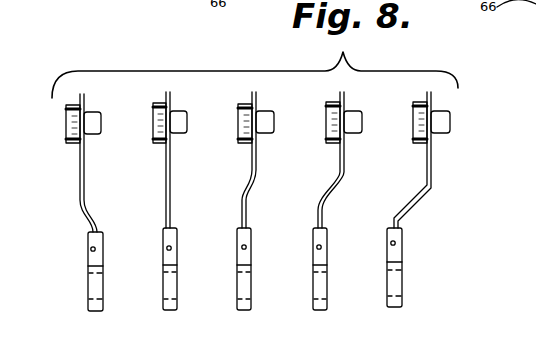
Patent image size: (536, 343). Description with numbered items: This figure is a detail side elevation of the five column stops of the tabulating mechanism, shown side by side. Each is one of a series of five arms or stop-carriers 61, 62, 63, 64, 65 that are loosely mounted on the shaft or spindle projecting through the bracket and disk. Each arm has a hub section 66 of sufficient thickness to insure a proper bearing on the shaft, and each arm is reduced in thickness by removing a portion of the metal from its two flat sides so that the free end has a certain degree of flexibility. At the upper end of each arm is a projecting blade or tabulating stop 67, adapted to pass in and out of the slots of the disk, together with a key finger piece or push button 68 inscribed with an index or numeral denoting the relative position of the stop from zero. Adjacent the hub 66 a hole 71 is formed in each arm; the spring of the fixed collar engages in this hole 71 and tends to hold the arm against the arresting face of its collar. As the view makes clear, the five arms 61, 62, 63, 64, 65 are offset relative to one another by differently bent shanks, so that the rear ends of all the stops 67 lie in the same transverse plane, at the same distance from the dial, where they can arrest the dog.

The arm or stop-carrier 61 is at (85, 178).
The arm or stop-carrier 62 is at (171, 183).
The arm or stop-carrier 63 is at (257, 180).
The arm or stop-carrier 64 is at (345, 180).
The arm or stop-carrier 65 is at (432, 180).
The hub section 66 is at (172, 290).
The tabulating stop 67 is at (102, 120).
The key finger piece or push button 68 is at (66, 121).
The hole 71 is at (166, 247).